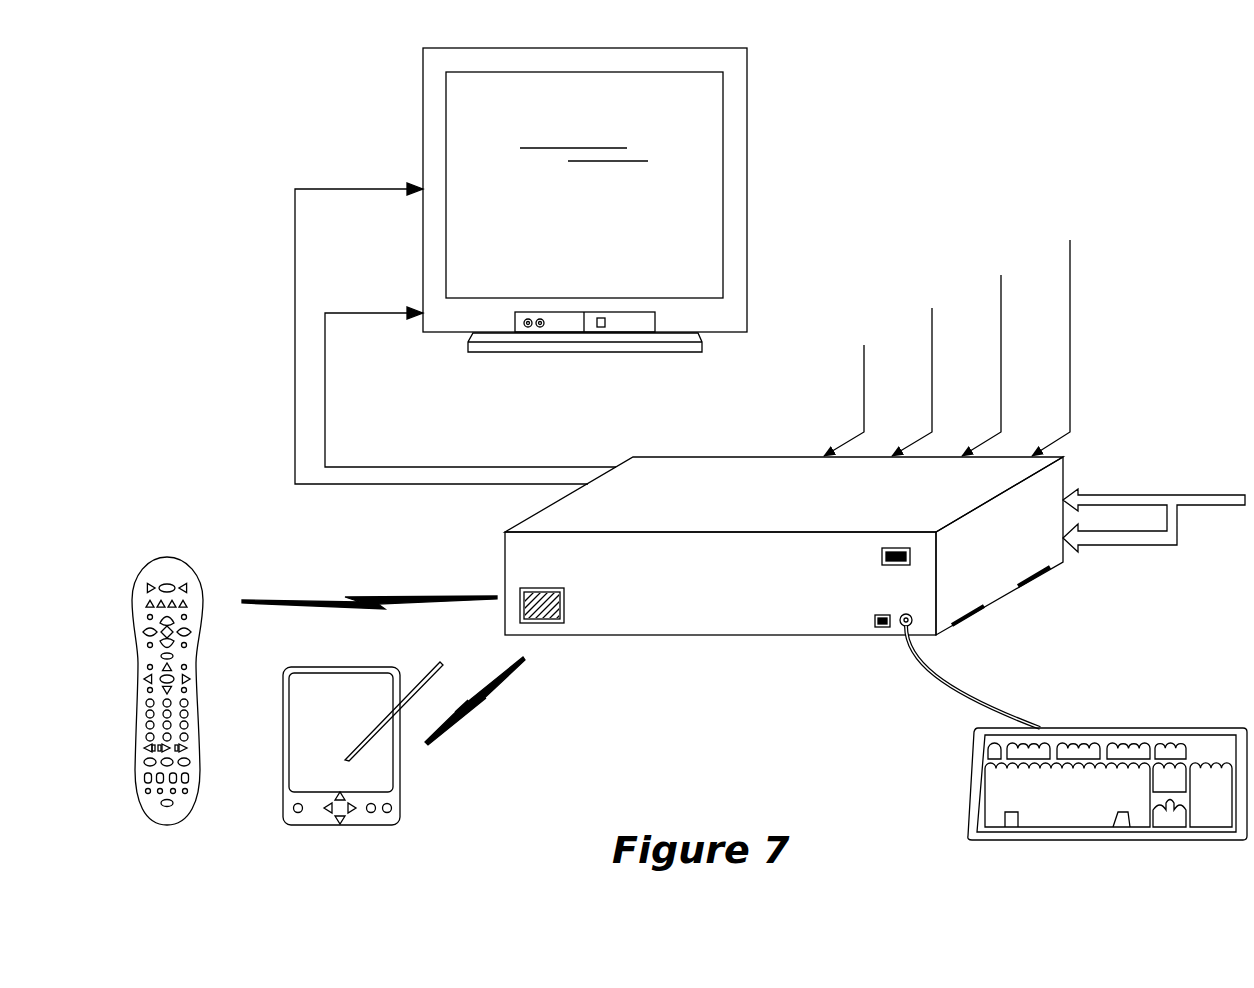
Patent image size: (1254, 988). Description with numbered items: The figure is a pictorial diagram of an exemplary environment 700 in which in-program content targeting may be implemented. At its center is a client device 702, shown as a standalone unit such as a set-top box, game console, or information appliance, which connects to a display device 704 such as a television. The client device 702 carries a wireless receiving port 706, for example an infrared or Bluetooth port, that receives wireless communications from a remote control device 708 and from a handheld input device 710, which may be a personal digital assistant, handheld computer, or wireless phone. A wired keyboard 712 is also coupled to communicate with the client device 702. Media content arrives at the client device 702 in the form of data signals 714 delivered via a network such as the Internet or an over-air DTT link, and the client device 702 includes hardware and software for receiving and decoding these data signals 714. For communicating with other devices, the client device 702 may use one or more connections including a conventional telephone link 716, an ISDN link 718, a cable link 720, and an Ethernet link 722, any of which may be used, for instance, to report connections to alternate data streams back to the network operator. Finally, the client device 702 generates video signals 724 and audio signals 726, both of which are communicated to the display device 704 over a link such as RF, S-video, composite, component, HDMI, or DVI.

The environment 700 is at (1168, 108).
The client device 702 is at (697, 456).
The display device 704 is at (747, 200).
The wireless receiving port 706 is at (555, 588).
The remote control device 708 is at (167, 557).
The handheld input device 710 is at (400, 773).
The wired keyboard 712 is at (1155, 728).
The data signals 714 is at (1130, 545).
The telephone link 716 is at (863, 298).
The ISDN link 718 is at (933, 260).
The cable link 720 is at (1000, 228).
The Ethernet link 722 is at (1070, 193).
The video signals 724 is at (441, 321).
The audio signals 726 is at (470, 374).